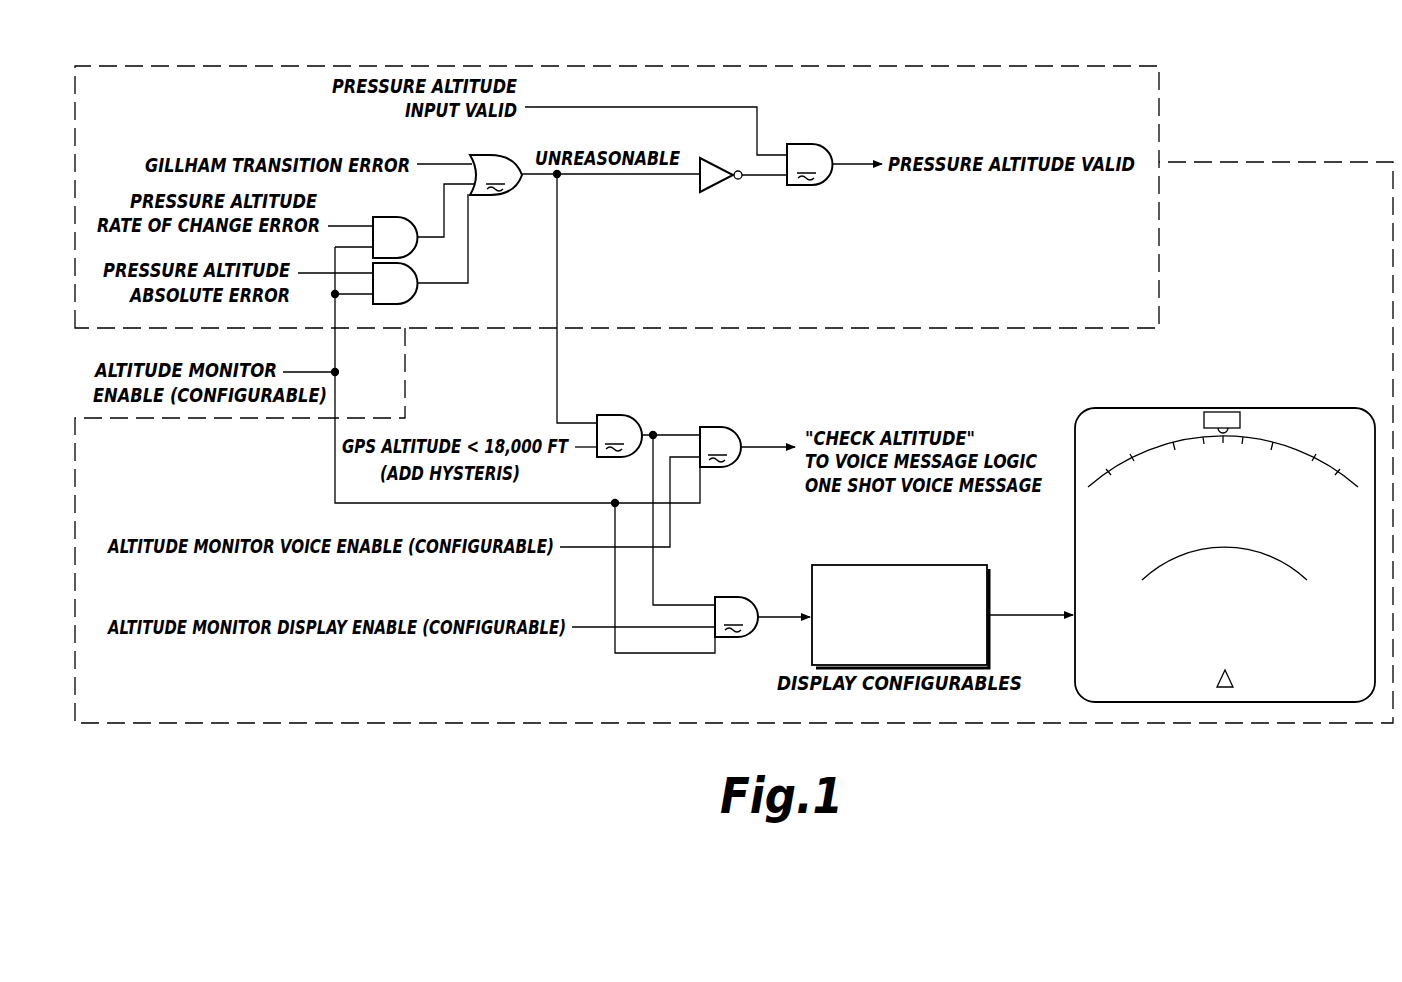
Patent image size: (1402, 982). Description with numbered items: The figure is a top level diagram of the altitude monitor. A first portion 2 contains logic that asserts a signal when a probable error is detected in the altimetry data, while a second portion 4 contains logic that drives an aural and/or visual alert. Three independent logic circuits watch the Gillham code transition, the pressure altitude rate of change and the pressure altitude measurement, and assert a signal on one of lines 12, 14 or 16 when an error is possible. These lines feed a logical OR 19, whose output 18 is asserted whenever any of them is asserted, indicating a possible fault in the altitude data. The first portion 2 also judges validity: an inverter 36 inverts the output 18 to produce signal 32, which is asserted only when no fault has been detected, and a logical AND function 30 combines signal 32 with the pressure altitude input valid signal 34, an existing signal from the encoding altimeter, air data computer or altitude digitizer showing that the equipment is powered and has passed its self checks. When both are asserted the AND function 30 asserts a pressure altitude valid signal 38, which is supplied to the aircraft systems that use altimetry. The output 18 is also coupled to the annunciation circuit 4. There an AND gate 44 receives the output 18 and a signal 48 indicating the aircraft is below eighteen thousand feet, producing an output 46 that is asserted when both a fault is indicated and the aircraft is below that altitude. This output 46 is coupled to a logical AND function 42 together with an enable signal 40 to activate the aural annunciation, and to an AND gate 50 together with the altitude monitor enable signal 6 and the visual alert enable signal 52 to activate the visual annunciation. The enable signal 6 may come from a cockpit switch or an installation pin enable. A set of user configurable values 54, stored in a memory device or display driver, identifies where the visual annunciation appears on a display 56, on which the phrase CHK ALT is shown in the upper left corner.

The first portion 2 is at (1048, 64).
The second portion 4 is at (1275, 160).
The altitude monitor enable signal 6 is at (312, 370).
The Gillham code transition error line 12 is at (448, 163).
The pressure altitude rate of change error line 14 is at (352, 225).
The pressure altitude measurement error line 16 is at (318, 275).
The output of logical OR 18 is at (558, 252).
The logical OR function 19 is at (585, 175).
The logical AND function 30 is at (810, 164).
The inverted output 32 is at (773, 176).
The pressure altitude input valid signal 34 is at (606, 107).
The inverter 36 is at (700, 191).
The pressure altitude valid signal 38 is at (857, 165).
The enable signal 40 is at (589, 549).
The logical AND function 42 is at (747, 447).
The AND gate 44 is at (619, 436).
The AND function output 46 is at (681, 432).
The below 18,000 feet signal 48 is at (583, 449).
The AND gate 50 is at (762, 617).
The visual alert enable signal 52 is at (597, 629).
The user configurable values 54 is at (957, 565).
The display 56 is at (1308, 410).